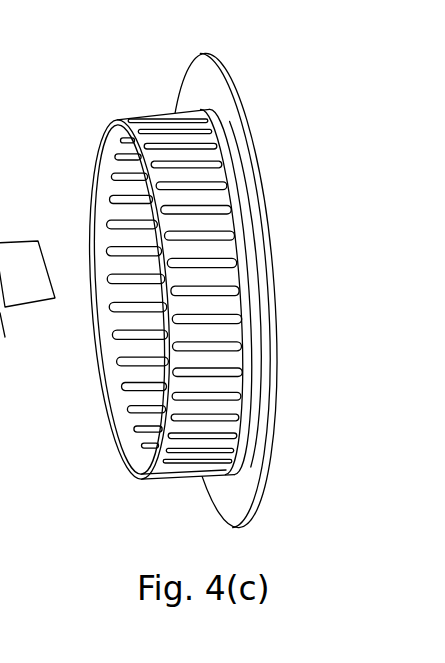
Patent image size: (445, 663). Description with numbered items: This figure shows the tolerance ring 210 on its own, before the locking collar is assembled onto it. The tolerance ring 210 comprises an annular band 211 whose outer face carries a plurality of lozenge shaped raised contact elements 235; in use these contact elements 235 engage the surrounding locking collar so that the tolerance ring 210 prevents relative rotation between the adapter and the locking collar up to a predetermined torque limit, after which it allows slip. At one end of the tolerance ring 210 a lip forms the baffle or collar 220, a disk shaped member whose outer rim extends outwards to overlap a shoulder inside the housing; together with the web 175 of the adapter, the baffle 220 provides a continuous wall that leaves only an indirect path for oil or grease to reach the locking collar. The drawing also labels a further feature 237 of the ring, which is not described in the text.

The tolerance ring 210 is at (222, 279).
The annular band 211 is at (102, 242).
The baffle or collar 220 is at (237, 90).
The lozenge shaped raised contact elements 235 is at (147, 118).
The inner rim surface 237 is at (110, 127).
The web 175 is at (173, 117).